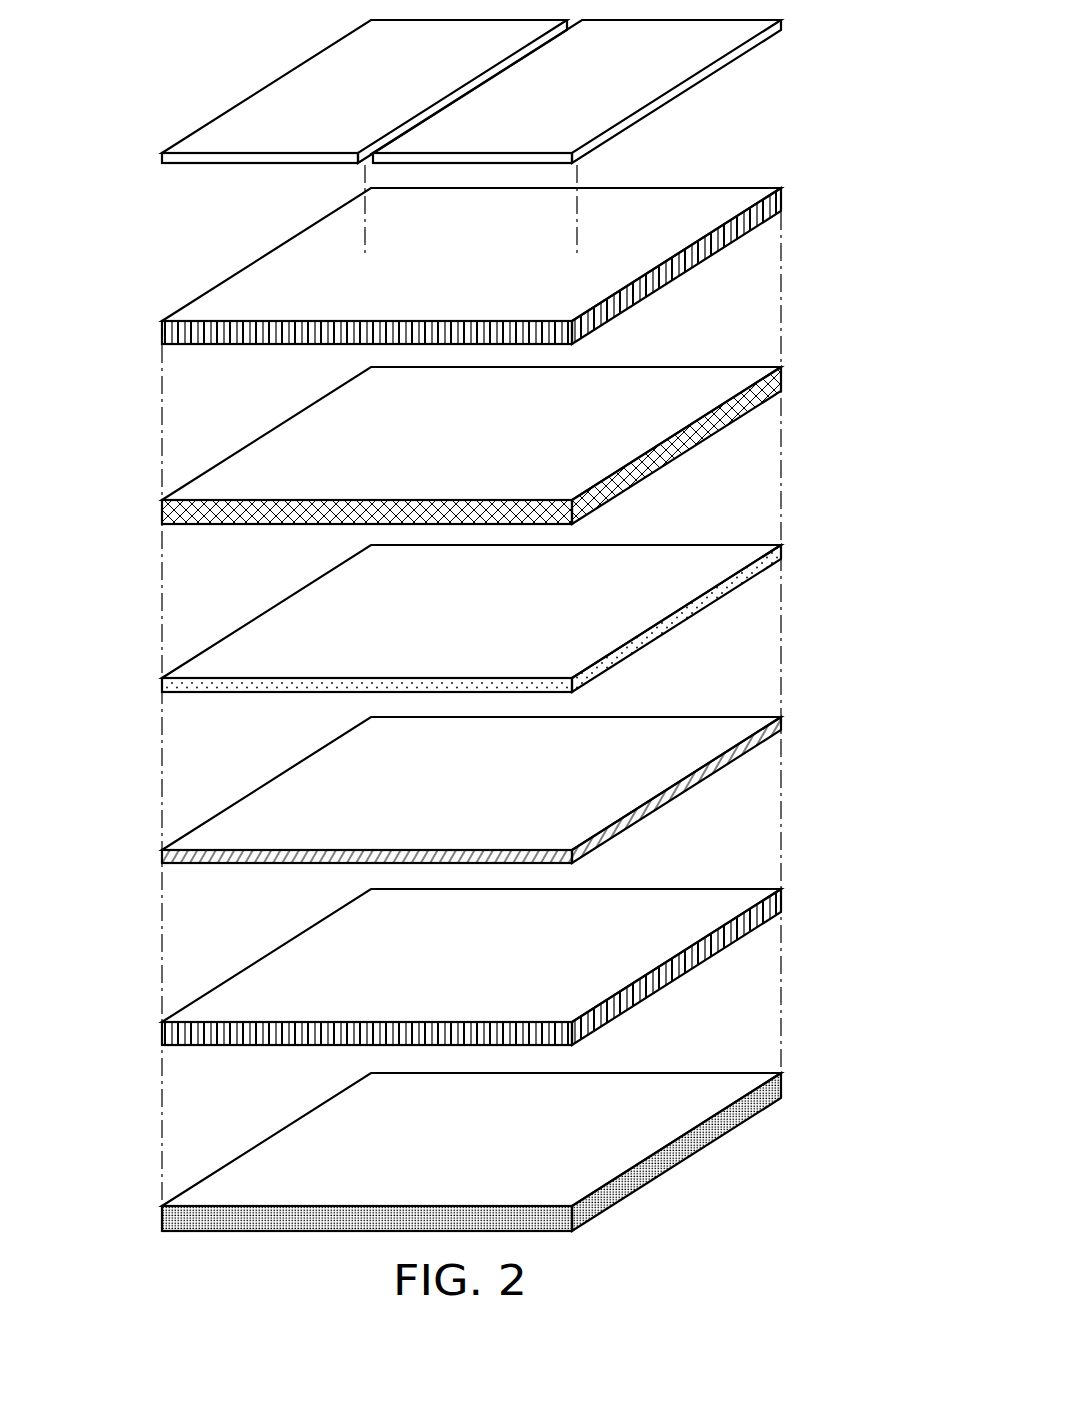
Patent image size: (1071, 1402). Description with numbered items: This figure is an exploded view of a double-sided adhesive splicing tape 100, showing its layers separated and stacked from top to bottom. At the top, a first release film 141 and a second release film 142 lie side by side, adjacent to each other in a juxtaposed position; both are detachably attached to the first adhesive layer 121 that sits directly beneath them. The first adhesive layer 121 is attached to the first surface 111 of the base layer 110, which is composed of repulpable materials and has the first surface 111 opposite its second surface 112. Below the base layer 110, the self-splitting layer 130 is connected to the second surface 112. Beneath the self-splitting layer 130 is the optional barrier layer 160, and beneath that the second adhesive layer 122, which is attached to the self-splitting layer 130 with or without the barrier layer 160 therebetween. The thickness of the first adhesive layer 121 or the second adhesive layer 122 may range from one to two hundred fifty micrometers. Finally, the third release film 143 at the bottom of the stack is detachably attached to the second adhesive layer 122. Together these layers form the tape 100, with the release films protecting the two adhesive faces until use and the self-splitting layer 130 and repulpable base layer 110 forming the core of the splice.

The double-sided adhesive splicing tape 100 is at (104, 33).
The first release film 141 is at (275, 95).
The second release film 142 is at (652, 84).
The first adhesive layer 121 is at (161, 333).
The base layer 110 is at (462, 447).
The first surface 111 is at (673, 418).
The second surface 112 is at (673, 462).
The self-splitting layer 130 is at (159, 686).
The barrier layer 160 is at (161, 856).
The second adhesive layer 122 is at (161, 1033).
The third release film 143 is at (161, 1220).